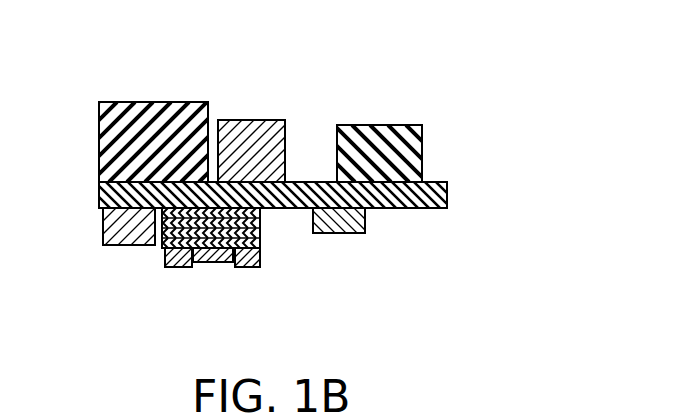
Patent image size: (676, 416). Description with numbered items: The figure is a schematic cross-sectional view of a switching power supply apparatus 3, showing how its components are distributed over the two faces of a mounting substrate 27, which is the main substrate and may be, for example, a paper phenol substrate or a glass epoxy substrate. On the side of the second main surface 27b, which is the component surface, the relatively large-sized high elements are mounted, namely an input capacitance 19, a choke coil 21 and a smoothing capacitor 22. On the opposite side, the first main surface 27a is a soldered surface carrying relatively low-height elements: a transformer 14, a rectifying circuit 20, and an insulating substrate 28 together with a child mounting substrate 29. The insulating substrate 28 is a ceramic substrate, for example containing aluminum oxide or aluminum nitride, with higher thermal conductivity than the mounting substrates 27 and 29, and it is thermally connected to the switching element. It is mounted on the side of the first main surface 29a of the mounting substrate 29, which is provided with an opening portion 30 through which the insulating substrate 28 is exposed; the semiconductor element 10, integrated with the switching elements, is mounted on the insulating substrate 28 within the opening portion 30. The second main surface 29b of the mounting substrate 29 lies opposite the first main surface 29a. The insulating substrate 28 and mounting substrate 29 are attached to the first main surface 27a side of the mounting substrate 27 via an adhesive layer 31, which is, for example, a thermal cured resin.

The switching power supply apparatus 3 is at (505, 77).
The semiconductor element 10 is at (213, 257).
The transformer 14 is at (125, 228).
The input capacitance 19 is at (375, 155).
The rectifying circuit 20 is at (350, 222).
The choke coil 21 is at (247, 135).
The smoothing capacitor 22 is at (145, 130).
The mounting substrate 27 is at (435, 196).
The first main surface 27a is at (430, 208).
The second main surface 27b is at (428, 182).
The insulating substrate 28 is at (257, 247).
The mounting substrate 29 is at (165, 257).
The first main surface 29a is at (160, 238).
The second main surface 29b is at (178, 265).
The opening portion 30 is at (190, 262).
The adhesive layer 31 is at (253, 213).